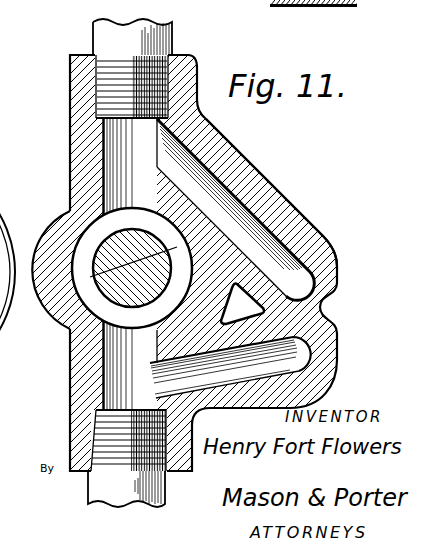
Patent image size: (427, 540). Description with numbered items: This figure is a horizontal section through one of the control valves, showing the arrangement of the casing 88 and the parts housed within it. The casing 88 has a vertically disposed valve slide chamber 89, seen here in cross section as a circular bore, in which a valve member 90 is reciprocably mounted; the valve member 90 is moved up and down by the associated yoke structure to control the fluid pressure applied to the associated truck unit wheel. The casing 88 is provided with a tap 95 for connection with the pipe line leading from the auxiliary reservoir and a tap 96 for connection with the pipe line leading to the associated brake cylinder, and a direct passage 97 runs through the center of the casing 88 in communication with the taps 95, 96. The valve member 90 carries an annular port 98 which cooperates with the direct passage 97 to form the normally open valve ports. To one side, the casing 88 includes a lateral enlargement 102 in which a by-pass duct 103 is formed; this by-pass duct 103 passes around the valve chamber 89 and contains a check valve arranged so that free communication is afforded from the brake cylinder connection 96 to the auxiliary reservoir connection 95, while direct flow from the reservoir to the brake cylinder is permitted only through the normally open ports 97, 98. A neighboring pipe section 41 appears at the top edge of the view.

The pipe section 41 is at (292, 3).
The casing 88 is at (82, 160).
The valve slide chamber 89 is at (73, 237).
The valve member 90 is at (110, 242).
The tap 95 is at (115, 443).
The tap 96 is at (172, 33).
The direct passage 97 is at (118, 140).
The annular port 98 is at (72, 292).
The lateral enlargement 102 is at (293, 217).
The by-pass duct 103 is at (247, 190).